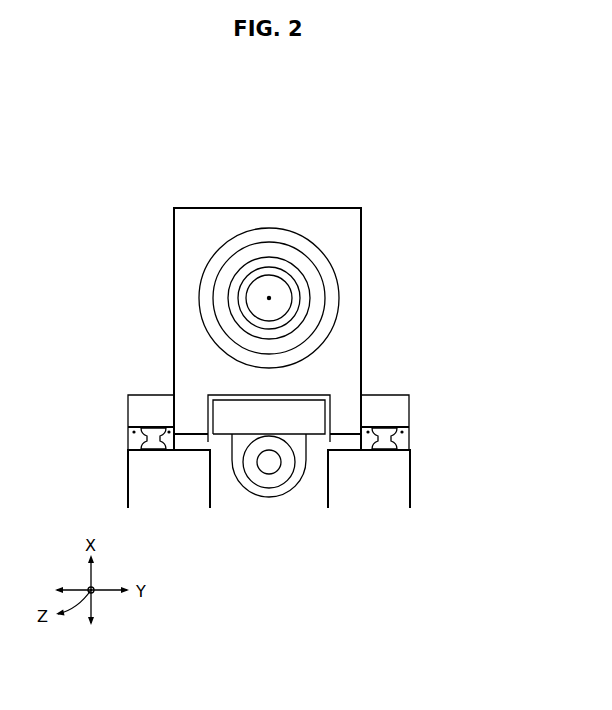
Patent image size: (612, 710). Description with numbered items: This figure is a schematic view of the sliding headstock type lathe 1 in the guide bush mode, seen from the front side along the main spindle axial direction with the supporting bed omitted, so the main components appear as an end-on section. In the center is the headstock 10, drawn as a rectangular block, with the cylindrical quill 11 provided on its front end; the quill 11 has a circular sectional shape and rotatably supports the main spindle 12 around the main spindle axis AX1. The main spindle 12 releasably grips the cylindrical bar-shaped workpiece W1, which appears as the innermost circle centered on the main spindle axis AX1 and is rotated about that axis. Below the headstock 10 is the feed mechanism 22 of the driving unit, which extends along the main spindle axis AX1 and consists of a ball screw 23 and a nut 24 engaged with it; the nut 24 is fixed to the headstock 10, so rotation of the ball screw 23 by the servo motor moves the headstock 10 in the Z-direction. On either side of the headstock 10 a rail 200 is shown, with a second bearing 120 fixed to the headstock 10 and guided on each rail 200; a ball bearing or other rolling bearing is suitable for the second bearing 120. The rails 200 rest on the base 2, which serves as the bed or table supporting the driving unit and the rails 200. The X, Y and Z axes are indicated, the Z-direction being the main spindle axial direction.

The sliding headstock type lathe 1 is at (177, 156).
The headstock 10 is at (364, 218).
The quill 11 is at (320, 275).
The main spindle 12 is at (282, 268).
The workpiece W1 is at (241, 291).
The main spindle axis AX1 is at (269, 298).
The rail 200 is at (147, 430).
The second bearing 120 is at (128, 443).
The base 2 is at (410, 498).
The feed mechanism 22 is at (302, 543).
The ball screw 23 is at (255, 467).
The nut 24 is at (281, 482).